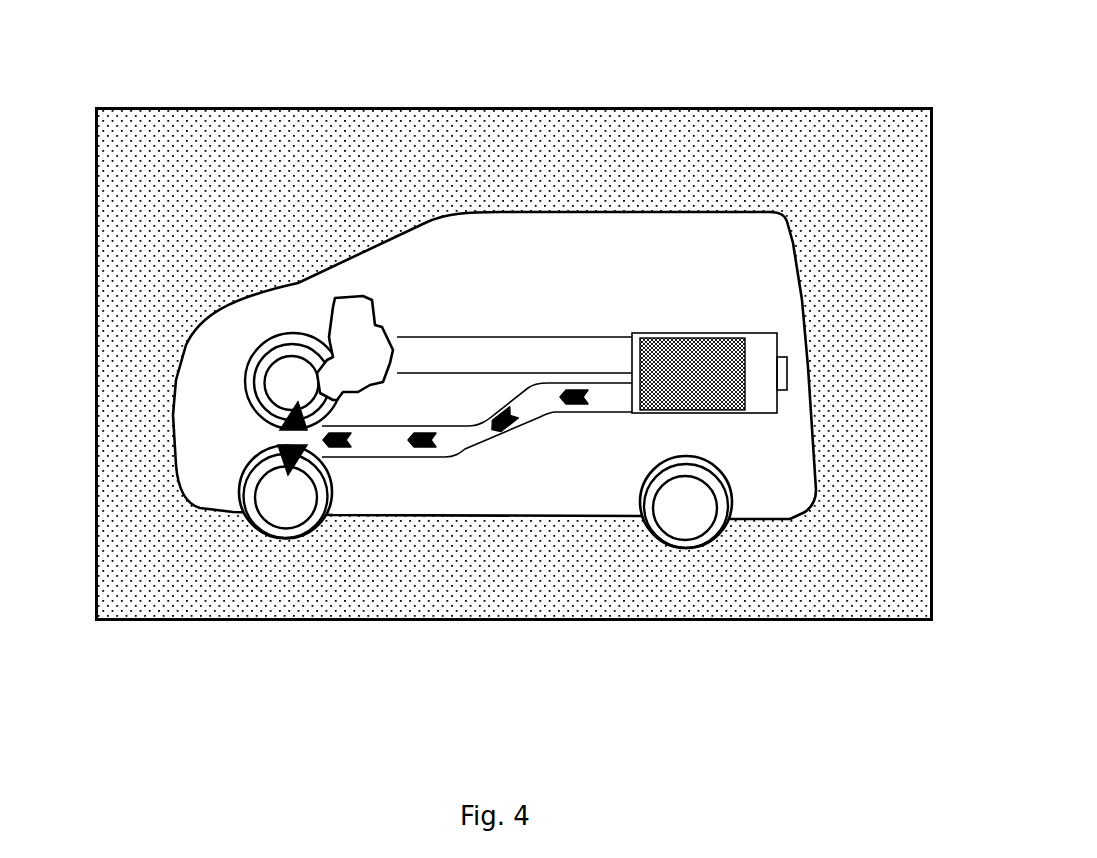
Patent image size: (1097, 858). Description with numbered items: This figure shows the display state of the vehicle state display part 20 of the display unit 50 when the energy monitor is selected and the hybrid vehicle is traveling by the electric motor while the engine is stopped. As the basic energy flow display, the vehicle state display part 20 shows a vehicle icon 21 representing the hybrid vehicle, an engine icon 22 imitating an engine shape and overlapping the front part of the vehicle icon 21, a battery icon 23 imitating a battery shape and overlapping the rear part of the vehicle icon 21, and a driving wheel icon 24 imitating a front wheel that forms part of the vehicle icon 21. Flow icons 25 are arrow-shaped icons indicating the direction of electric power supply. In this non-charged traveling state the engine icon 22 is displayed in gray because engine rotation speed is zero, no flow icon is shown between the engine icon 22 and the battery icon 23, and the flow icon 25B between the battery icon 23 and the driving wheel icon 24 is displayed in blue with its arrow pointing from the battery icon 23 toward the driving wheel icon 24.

The vehicle state display part 20 is at (488, 107).
The vehicle icon 21 is at (429, 365).
The engine icon 22 is at (353, 310).
The battery icon 23 is at (758, 390).
The driving wheel icon 24 is at (275, 502).
The flow icons 25 is at (508, 430).
The flow icon 25B is at (427, 448).
The display unit 50 is at (533, 310).